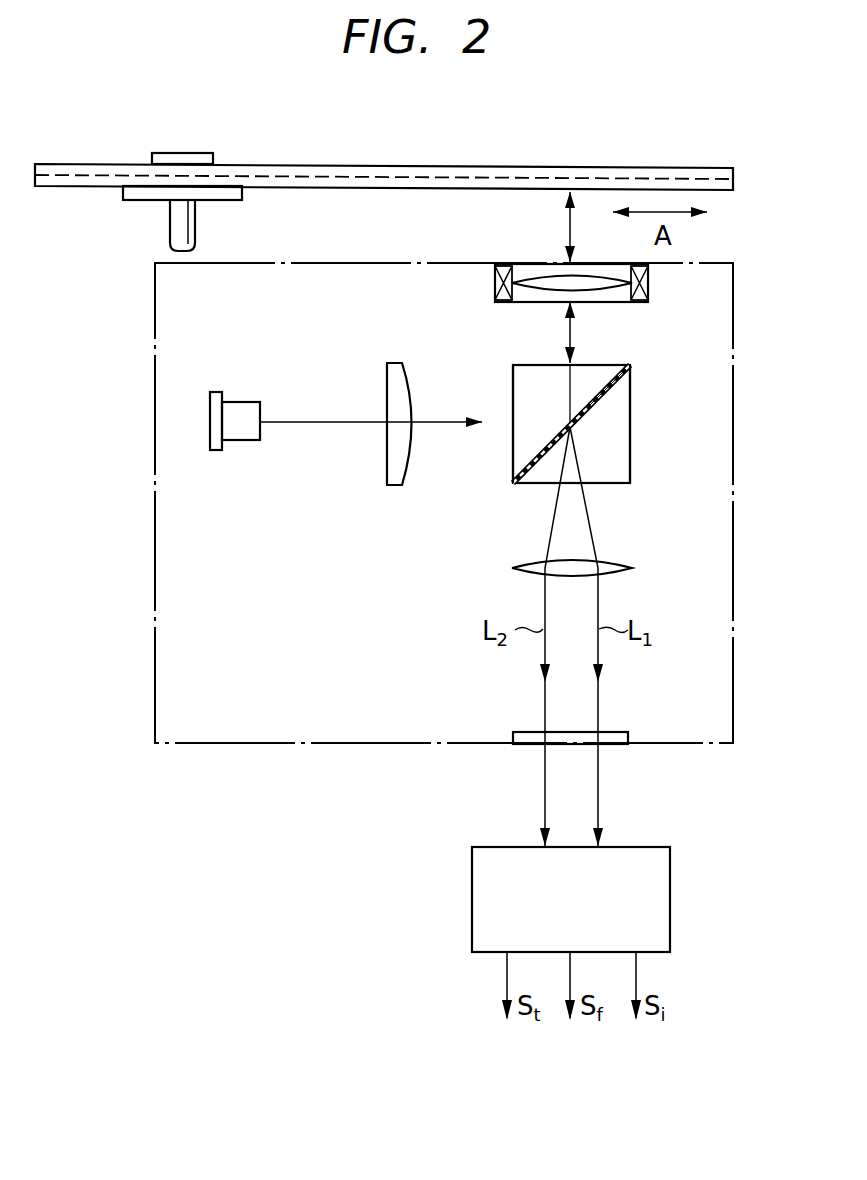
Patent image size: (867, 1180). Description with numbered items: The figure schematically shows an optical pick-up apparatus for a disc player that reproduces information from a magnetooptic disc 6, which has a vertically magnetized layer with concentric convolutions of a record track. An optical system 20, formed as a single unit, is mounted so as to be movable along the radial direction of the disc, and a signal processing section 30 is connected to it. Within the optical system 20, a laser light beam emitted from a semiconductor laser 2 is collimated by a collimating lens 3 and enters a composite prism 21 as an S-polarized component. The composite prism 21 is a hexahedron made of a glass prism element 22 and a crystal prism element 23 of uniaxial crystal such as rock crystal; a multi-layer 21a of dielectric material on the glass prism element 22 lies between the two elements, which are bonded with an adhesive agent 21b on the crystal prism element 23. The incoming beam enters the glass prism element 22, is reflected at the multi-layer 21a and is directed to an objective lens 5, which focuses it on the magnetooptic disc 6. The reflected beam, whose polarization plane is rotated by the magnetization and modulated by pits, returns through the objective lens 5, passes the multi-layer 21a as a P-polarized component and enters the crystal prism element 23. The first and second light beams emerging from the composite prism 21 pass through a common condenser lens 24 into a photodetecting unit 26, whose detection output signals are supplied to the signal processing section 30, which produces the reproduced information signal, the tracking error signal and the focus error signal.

The semiconductor laser 2 is at (240, 440).
The collimating lens 3 is at (387, 392).
The objective lens 5 is at (535, 263).
The magnetooptic disc 6 is at (394, 167).
The optical system 20 is at (155, 668).
The composite prism 21 is at (576, 416).
The multi-layer of dielectric material 21a is at (608, 372).
The adhesive agent 21b is at (610, 392).
The glass prism element 22 is at (515, 447).
The crystal prism element 23 is at (630, 470).
The condenser lens 24 is at (520, 560).
The photodetecting unit 26 is at (528, 746).
The signal processing section 30 is at (472, 916).